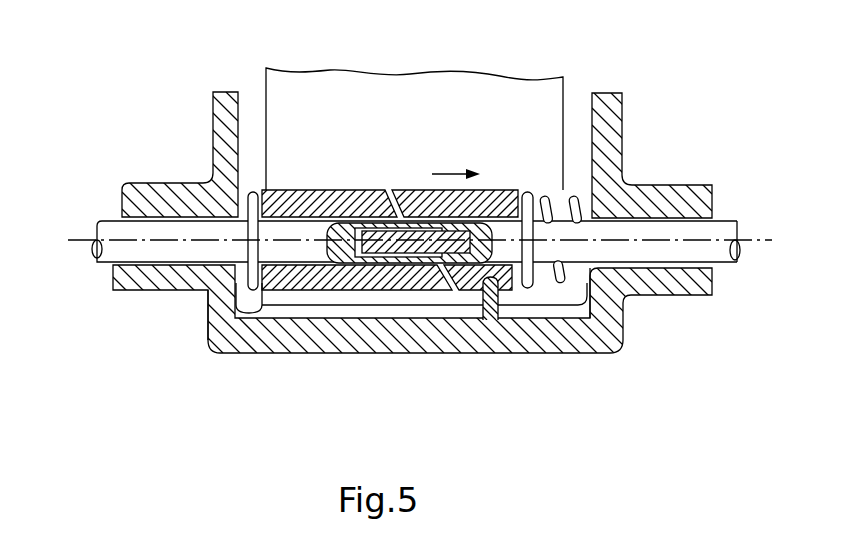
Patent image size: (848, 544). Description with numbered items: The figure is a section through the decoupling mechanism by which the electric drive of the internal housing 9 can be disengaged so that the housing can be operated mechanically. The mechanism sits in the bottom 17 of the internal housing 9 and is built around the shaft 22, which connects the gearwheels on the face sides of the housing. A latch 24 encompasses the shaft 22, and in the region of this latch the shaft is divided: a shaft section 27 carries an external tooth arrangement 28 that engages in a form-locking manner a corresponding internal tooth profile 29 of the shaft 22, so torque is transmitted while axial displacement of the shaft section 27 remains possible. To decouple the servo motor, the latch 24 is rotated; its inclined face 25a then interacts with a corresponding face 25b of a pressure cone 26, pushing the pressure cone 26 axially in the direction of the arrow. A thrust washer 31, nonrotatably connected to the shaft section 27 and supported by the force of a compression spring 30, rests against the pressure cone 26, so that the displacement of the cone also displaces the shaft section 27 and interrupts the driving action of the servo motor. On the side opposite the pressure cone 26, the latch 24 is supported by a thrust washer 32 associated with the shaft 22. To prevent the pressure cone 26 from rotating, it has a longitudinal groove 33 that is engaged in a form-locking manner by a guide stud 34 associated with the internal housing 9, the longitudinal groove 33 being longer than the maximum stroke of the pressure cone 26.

The internal housing 9 is at (198, 95).
The bottom 17 is at (222, 336).
The shaft 22 is at (95, 236).
The latch 24 is at (276, 268).
The inclined face 25a is at (372, 193).
The corresponding face 25b is at (418, 193).
The pressure cone 26 is at (493, 193).
The shaft section 27 is at (737, 245).
The external tooth arrangement 28 is at (385, 266).
The internal tooth profile 29 is at (352, 268).
The compression spring 30 is at (592, 262).
The thrust washer 31 is at (527, 195).
The thrust washer 32 is at (207, 298).
The longitudinal groove 33 is at (478, 320).
The guide stud 34 is at (500, 282).